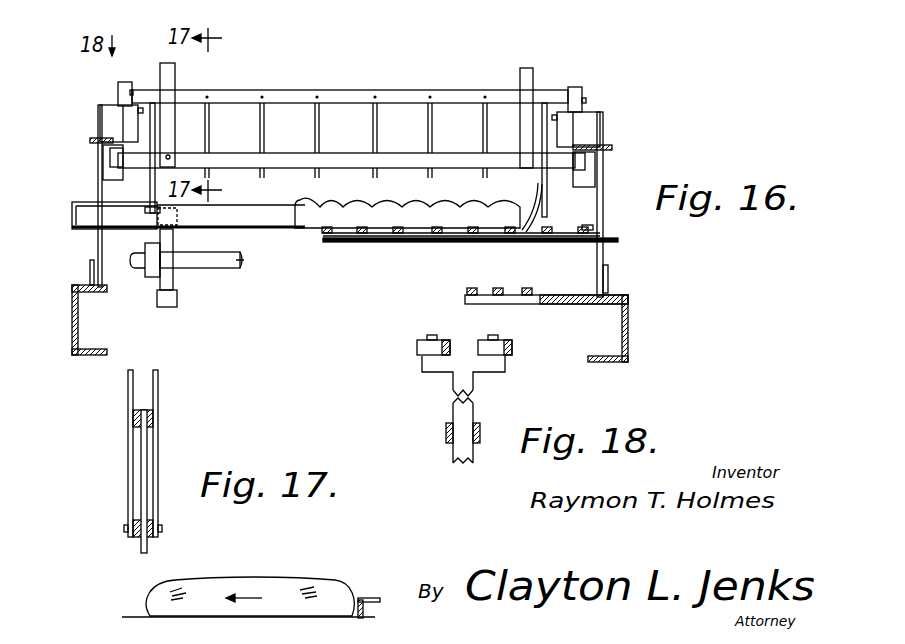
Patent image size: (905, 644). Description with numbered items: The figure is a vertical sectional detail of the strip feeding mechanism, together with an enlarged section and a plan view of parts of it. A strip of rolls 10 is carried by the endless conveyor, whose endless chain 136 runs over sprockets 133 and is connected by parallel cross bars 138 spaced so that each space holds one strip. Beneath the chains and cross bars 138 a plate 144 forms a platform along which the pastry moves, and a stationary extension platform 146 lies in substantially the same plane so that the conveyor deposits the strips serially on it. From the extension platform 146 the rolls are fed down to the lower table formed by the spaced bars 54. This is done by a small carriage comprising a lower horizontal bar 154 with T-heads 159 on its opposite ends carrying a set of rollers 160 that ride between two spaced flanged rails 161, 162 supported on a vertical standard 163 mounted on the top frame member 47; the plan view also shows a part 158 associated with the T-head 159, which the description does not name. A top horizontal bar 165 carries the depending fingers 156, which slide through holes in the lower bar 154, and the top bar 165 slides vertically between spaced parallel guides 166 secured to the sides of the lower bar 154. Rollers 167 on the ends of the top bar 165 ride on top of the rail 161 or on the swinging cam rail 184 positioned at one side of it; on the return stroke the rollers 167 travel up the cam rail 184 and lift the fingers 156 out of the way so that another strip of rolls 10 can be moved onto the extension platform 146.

In FIG. 16, the strip of rolls 10 is at (361, 197).
In FIG. 17, the strip of rolls 10 is at (241, 583).
In FIG. 16, the top frame members 47 is at (628, 325).
In FIG. 16, the spaced bars 54 is at (468, 290).
In FIG. 16, the sprockets 133 is at (221, 259).
In FIG. 16, the endless chain 136 is at (178, 302).
In FIG. 16, the cross bars 138 is at (256, 200).
In FIG. 17, the cross bars 138 is at (372, 598).
In FIG. 16, the plate 144 is at (167, 240).
In FIG. 16, the extension platform 146 is at (482, 241).
In FIG. 16, the lower horizontal bar 154 is at (404, 150).
In FIG. 17, the lower horizontal bar 154 is at (148, 537).
In FIG. 16, the fingers 156 is at (312, 129).
In FIG. 17, the fingers 156 is at (141, 457).
In FIG. 18, the shaft 158 is at (474, 408).
In FIG. 18, the T-heads 159 is at (494, 365).
In FIG. 16, the rollers 160 is at (124, 160).
In FIG. 18, the rollers 160 is at (426, 342).
In FIG. 16, the flanged rail 161 is at (110, 152).
In FIG. 16, the flanged rail 162 is at (108, 175).
In FIG. 16, the vertical standard 163 is at (605, 253).
In FIG. 16, the top horizontal bar 165 is at (440, 95).
In FIG. 17, the top horizontal bar 165 is at (158, 420).
In FIG. 16, the guides 166 is at (528, 68).
In FIG. 17, the guides 166 is at (158, 382).
In FIG. 18, the guides 166 is at (446, 433).
In FIG. 16, the rollers 167 is at (118, 92).
In FIG. 16, the cam rail 184 is at (125, 128).